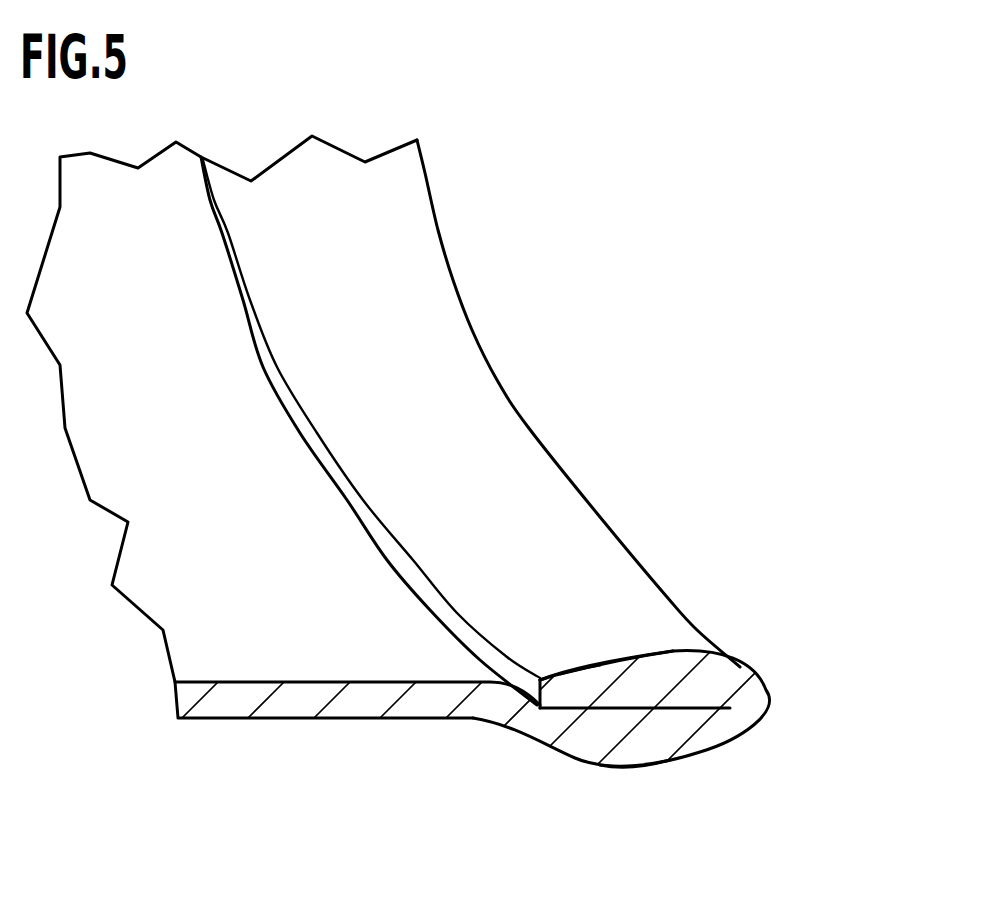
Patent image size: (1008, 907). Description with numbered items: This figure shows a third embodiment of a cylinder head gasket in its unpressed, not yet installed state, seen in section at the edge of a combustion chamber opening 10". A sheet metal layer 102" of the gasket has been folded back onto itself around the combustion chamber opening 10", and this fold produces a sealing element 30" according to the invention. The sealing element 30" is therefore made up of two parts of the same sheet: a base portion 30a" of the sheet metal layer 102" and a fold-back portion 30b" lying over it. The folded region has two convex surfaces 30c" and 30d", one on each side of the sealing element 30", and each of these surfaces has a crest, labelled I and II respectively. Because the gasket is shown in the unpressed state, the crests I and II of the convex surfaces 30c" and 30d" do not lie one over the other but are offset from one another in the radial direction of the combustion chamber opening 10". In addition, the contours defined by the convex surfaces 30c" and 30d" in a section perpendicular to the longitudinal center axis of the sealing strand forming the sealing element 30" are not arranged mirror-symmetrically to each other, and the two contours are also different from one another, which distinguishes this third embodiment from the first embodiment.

The combustion chamber opening 10 is at (545, 410).
The sheet metal layer 102 is at (298, 717).
The sealing element 30 is at (790, 730).
The base portion 30a is at (663, 732).
The fold-back portion 30b is at (636, 683).
The convex surface 30c is at (585, 665).
The convex surface 30d is at (647, 770).
The crest I is at (692, 652).
The crest II is at (612, 767).